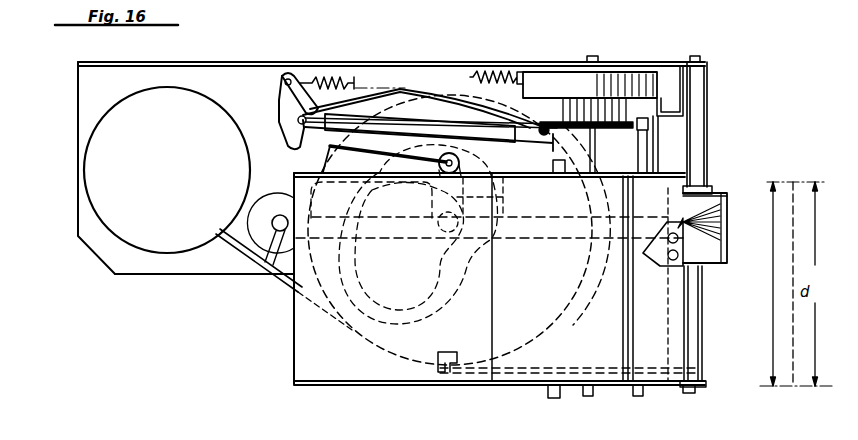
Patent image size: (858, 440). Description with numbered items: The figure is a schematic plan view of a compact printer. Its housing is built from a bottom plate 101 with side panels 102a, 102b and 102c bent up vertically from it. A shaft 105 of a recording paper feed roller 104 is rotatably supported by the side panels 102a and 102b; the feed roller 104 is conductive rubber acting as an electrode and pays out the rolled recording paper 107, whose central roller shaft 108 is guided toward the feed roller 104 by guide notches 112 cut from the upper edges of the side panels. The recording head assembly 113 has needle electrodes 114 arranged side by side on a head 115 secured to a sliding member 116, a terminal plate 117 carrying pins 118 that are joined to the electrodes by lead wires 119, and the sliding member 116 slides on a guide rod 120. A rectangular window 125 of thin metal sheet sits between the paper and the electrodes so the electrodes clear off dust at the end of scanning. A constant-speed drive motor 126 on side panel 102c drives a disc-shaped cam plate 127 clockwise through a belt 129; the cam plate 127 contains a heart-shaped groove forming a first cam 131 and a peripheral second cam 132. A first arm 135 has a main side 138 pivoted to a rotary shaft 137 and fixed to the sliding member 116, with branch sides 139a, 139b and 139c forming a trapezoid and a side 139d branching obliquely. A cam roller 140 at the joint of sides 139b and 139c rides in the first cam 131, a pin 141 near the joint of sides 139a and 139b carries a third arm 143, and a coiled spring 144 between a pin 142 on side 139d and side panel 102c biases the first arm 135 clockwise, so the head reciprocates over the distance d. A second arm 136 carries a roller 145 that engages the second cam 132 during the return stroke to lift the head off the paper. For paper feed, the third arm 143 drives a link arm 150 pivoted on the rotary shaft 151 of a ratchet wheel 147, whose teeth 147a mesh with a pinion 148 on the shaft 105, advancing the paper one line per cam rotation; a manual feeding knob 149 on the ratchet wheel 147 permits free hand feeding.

The bottom plate 101 is at (168, 274).
The side panel 102a is at (352, 385).
The side panel 102b is at (294, 180).
The side panel 102c is at (232, 62).
The recording paper feed roller 104 is at (684, 388).
The shaft 105 is at (648, 152).
The rolled recording paper 107 is at (510, 385).
The roller shaft 108 is at (553, 165).
The guide notch 112 is at (478, 385).
The recording head assembly 113 is at (727, 254).
The needle electrodes 114 is at (640, 270).
The head 115 is at (663, 265).
The sliding member 116 is at (703, 270).
The terminal plate 117 is at (726, 196).
The pins 118 is at (735, 226).
The lead wires 119 is at (708, 186).
The guide rod 120 is at (707, 90).
The rectangular window 125 is at (700, 388).
The constant-speed drive motor 126 is at (95, 210).
The cam plate 127 is at (550, 328).
The belt 129 is at (232, 258).
The first cam 131 is at (424, 314).
The second cam 132 is at (470, 92).
The first arm 135 is at (558, 242).
The second arm 136 is at (590, 397).
The rotary shaft 137 is at (268, 274).
The main side 138 is at (606, 255).
The branch side 139a is at (305, 148).
The branch side 139b is at (395, 115).
The branch side 139c is at (505, 206).
The side 139d is at (280, 92).
The cam roller 140 is at (433, 177).
The pin 141 is at (298, 124).
The pin 142 is at (286, 70).
The third arm 143 is at (436, 105).
The coiled spring 144 is at (330, 77).
The roller 145 is at (438, 368).
The ratchet wheel 147 is at (608, 72).
The teeth 147a is at (647, 72).
The pinion 148 is at (684, 66).
The manual feeding knob 149 is at (548, 72).
The link arm 150 is at (606, 128).
The rotary shaft 151 is at (592, 56).